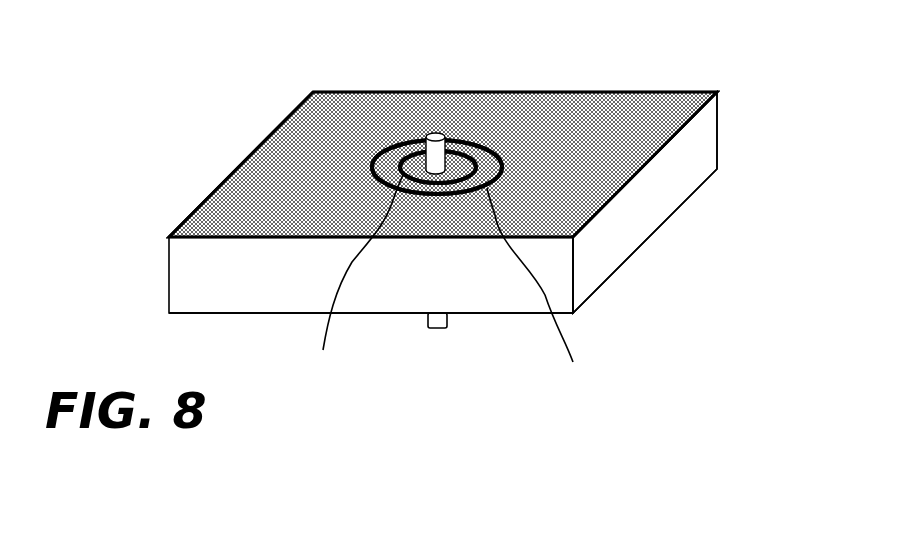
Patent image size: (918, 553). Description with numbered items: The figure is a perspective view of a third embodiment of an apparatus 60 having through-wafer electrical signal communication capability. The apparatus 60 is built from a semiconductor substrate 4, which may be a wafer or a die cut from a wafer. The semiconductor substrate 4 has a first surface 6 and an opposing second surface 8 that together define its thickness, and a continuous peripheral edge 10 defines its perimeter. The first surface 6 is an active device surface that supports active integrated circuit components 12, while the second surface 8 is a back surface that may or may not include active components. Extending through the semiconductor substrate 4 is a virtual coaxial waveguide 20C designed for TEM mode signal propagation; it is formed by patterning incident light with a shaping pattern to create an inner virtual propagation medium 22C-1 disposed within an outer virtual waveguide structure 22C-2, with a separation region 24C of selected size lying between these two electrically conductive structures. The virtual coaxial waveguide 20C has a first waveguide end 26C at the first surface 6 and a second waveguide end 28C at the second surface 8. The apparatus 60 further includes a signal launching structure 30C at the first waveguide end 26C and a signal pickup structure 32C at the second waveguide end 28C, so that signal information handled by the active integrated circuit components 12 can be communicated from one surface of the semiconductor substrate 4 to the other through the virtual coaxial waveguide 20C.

The semiconductor substrate 4 is at (708, 72).
The first surface 6 is at (645, 107).
The second surface 8 is at (383, 315).
The continuous peripheral edge 10 is at (652, 198).
The active integrated circuit components 12 is at (256, 166).
The apparatus 60 is at (201, 57).
The virtual coaxial waveguide 20C is at (514, 129).
The inner virtual propagation medium 22C-1 is at (353, 280).
The outer virtual waveguide structure 22C-2 is at (556, 294).
The separation region 24C is at (478, 148).
The first waveguide end 26C is at (390, 143).
The second waveguide end 28C is at (470, 330).
The signal launching structure 30C is at (435, 133).
The signal pickup structure 32C is at (440, 328).